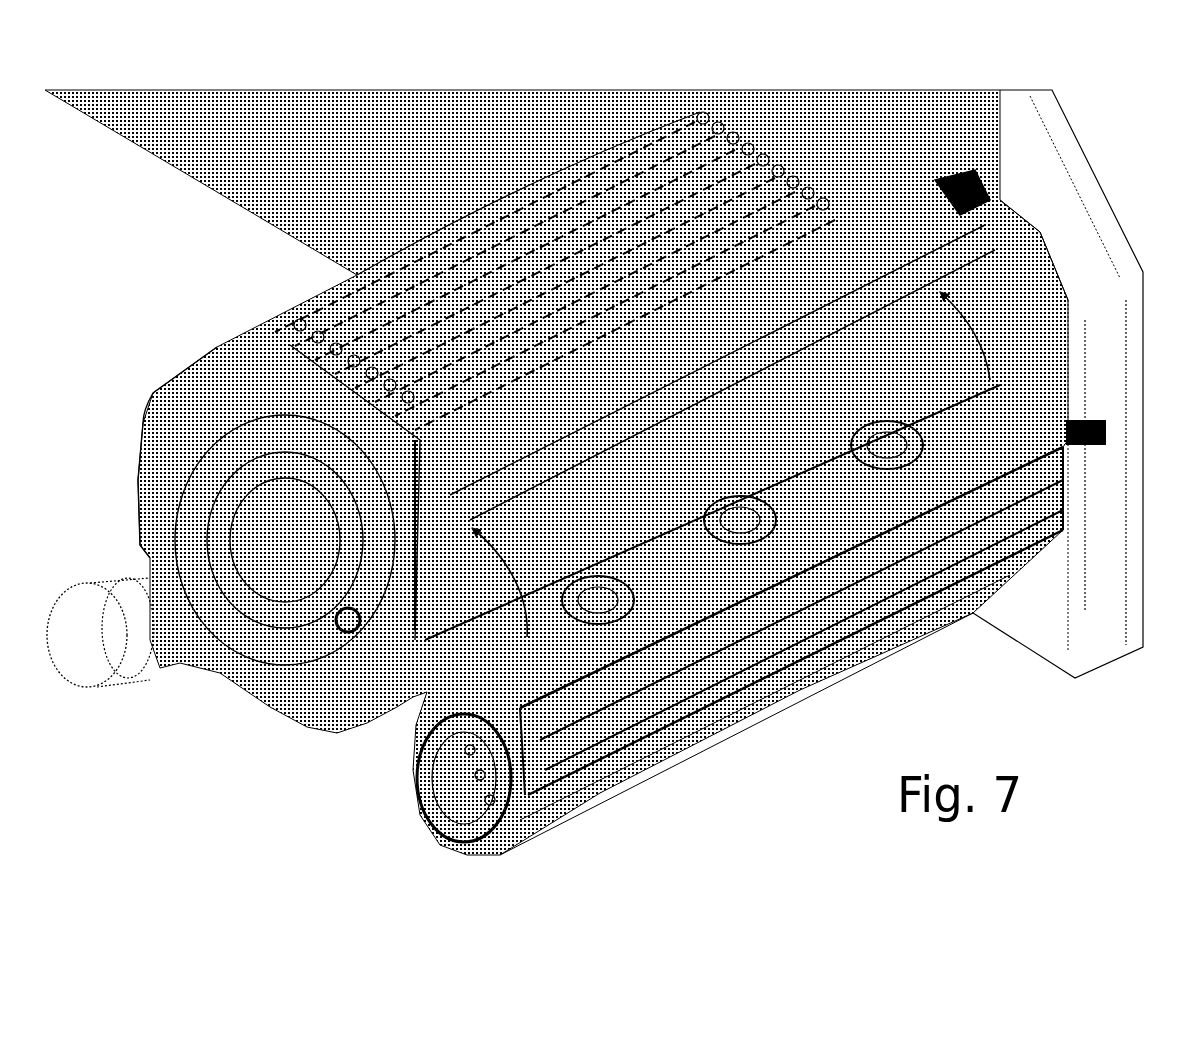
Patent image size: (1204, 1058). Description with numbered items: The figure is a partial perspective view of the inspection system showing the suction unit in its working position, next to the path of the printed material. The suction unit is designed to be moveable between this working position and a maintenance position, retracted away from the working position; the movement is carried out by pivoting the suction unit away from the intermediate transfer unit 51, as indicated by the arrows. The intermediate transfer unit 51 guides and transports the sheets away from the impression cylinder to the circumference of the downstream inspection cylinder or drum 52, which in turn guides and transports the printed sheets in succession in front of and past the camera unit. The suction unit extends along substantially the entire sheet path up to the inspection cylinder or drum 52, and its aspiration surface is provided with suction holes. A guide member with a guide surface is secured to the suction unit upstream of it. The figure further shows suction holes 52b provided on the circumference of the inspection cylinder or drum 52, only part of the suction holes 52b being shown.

The inspection cylinder or drum 52 is at (155, 408).
The suction holes 52b is at (297, 320).
The intermediate transfer unit 51 is at (427, 805).